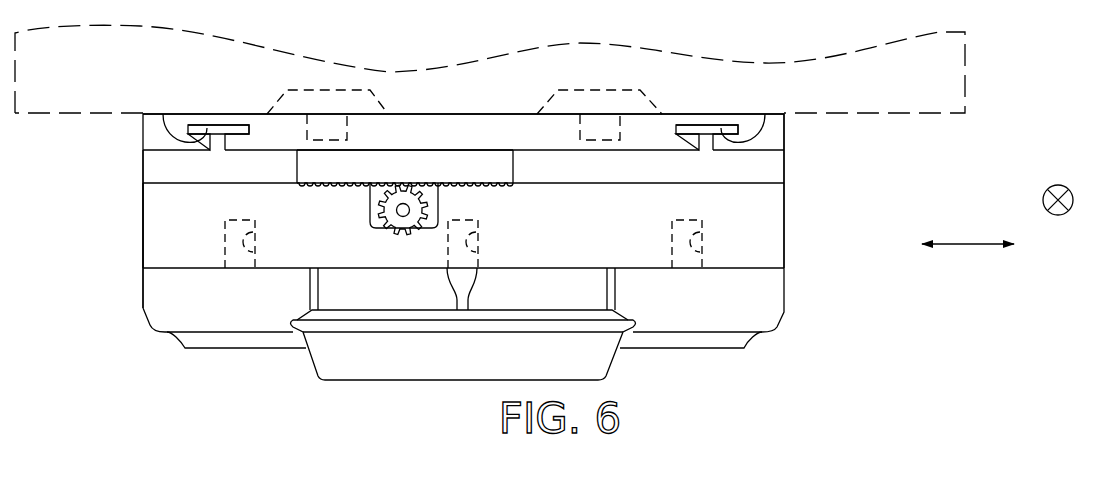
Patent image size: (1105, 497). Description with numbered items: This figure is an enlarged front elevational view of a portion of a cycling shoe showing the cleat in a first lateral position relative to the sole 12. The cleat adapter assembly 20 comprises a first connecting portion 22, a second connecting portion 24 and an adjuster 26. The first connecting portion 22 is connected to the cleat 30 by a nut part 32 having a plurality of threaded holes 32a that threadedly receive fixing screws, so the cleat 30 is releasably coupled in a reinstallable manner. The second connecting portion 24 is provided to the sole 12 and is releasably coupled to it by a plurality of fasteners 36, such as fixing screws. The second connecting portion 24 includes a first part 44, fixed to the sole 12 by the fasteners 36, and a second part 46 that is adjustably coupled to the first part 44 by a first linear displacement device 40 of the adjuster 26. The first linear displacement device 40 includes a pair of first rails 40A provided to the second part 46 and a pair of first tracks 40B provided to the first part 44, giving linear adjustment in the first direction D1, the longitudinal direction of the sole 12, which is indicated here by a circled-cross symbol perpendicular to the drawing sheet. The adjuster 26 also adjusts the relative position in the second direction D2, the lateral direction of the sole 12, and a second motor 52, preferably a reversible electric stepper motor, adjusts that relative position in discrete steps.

The sole 12 is at (968, 68).
The cleat adapter assembly 20 is at (826, 298).
The first connecting portion 22 is at (141, 227).
The second connecting portion 24 is at (872, 125).
The adjuster 26 is at (173, 163).
The cleat 30 is at (225, 350).
The nut part 32 is at (722, 222).
The threaded holes 32a is at (262, 252).
The fasteners 36 is at (313, 88).
The first linear displacement device 40 is at (205, 146).
The first rails 40A is at (231, 125).
The first tracks 40B is at (164, 114).
The first part 44 is at (788, 135).
The second part 46 is at (788, 173).
The second motor 52 is at (377, 234).
The first direction D1 is at (1062, 185).
The second direction D2 is at (966, 244).